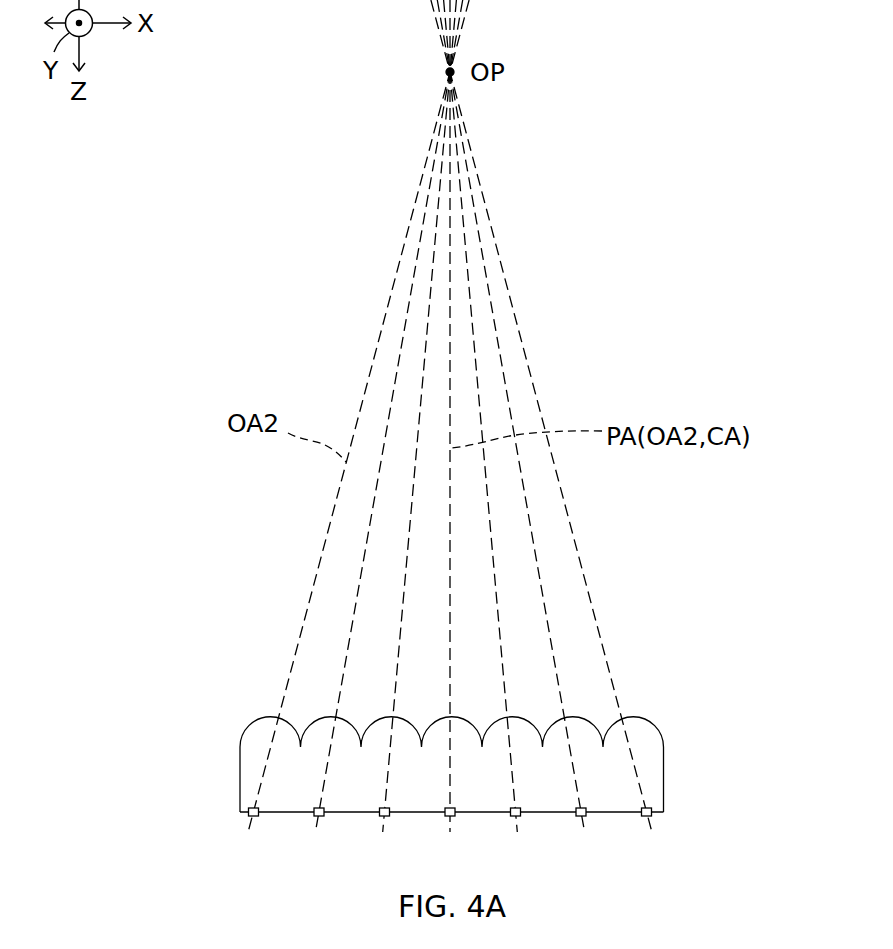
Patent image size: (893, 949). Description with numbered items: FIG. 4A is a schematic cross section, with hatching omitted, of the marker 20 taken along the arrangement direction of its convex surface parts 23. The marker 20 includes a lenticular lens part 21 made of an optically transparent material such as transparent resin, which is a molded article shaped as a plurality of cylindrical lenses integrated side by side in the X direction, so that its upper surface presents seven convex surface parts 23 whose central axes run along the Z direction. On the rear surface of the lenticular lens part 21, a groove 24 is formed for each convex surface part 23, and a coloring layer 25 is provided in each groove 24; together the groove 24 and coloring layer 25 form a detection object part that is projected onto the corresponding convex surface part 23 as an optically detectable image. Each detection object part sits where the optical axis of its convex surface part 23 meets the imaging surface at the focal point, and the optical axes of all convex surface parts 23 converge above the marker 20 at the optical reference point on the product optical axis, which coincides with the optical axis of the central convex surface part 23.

The marker 20 is at (464, 744).
The lenticular lens part 21 is at (664, 773).
The convex surface part 23 is at (253, 724).
The groove 24 is at (243, 806).
The coloring layer 25 is at (252, 815).